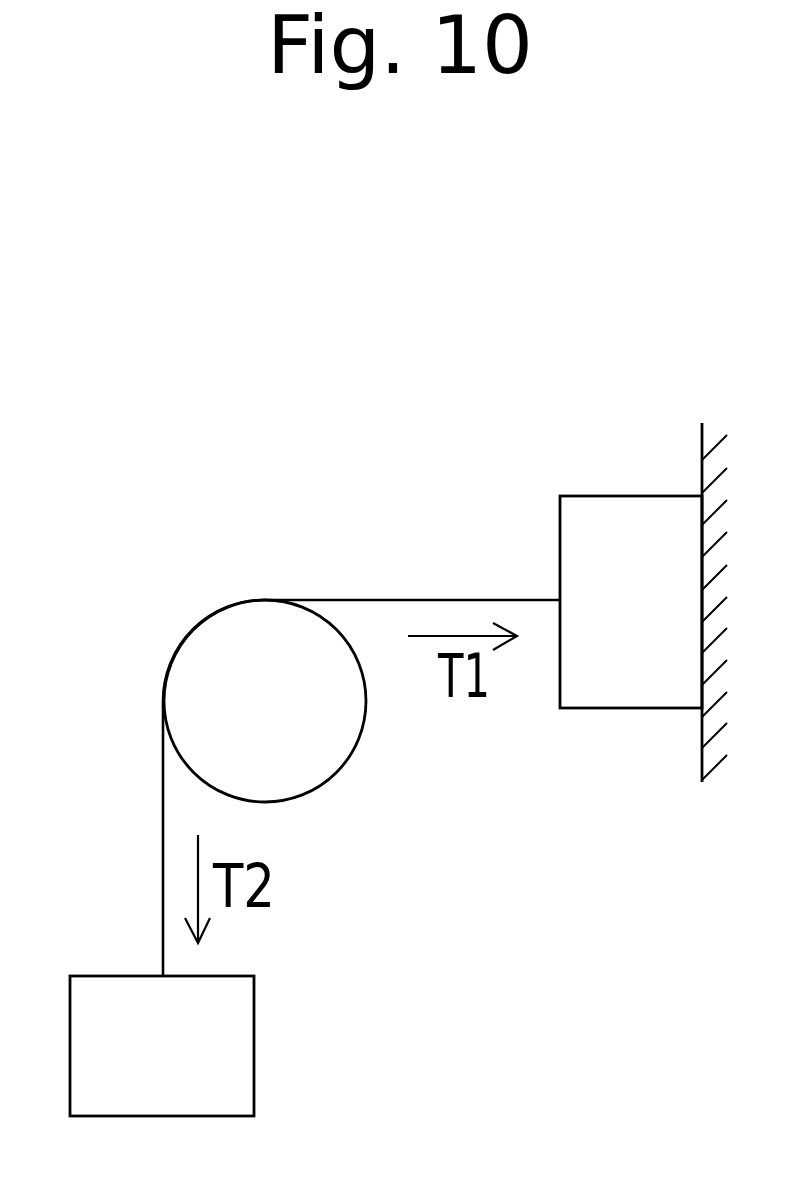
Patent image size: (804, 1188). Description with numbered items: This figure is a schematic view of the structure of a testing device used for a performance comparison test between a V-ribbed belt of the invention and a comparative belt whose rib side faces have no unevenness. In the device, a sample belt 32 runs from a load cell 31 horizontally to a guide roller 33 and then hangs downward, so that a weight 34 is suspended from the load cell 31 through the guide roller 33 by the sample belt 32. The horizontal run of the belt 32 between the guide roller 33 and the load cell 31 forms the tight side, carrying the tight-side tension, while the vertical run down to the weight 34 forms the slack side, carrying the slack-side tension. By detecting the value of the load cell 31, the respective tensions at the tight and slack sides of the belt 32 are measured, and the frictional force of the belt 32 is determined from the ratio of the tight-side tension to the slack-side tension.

The load cell 31 is at (627, 695).
The sample belt 32 is at (403, 600).
The guide roller 33 is at (332, 752).
The weight 34 is at (242, 1049).